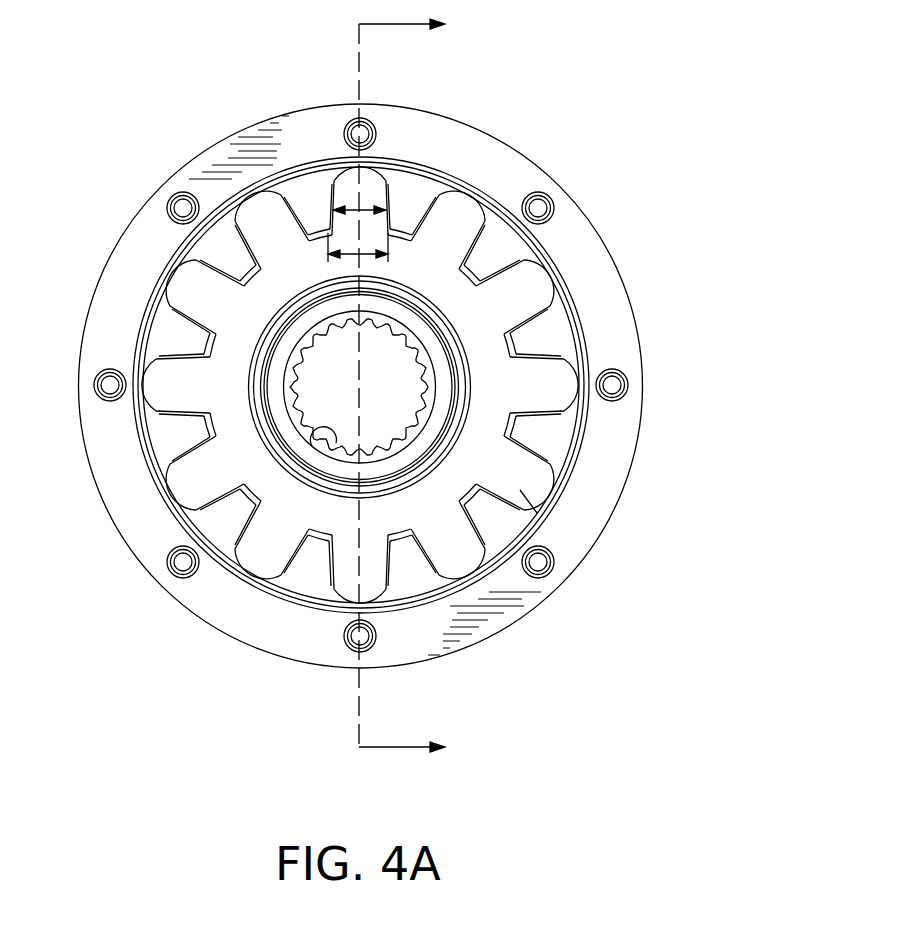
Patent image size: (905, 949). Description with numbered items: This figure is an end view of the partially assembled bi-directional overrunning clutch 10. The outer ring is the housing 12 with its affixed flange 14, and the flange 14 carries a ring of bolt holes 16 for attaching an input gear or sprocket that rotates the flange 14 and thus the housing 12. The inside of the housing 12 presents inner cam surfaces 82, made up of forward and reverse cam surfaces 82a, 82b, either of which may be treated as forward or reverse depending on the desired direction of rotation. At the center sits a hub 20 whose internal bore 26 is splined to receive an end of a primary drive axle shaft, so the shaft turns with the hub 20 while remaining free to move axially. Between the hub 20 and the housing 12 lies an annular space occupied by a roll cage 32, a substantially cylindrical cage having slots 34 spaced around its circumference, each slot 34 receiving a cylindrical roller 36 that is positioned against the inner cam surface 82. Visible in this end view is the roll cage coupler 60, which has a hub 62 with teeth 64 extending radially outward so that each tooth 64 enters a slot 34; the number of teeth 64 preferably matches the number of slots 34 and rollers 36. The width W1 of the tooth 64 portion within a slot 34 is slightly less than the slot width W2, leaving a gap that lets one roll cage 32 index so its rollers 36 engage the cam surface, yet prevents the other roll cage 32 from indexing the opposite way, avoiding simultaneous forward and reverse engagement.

The bi-directional overrunning clutch 10 is at (553, 116).
The housing 12 is at (578, 568).
The flange 14 is at (462, 150).
The bolt holes 16 is at (538, 205).
The hub 20 is at (292, 432).
The internal bore 26 is at (313, 428).
The roll cage 32 is at (403, 193).
The slots 34 is at (331, 222).
The rollers 36 is at (574, 380).
The roll cage coupler 60 is at (540, 487).
The hub 62 is at (425, 498).
The teeth 64 is at (520, 497).
The inner cam surfaces 82 is at (557, 270).
The forward cam surface 82a is at (567, 300).
The reverse cam surface 82b is at (542, 247).
The width of tooth portion within slot W1 is at (330, 210).
The width of slot W2 is at (388, 254).